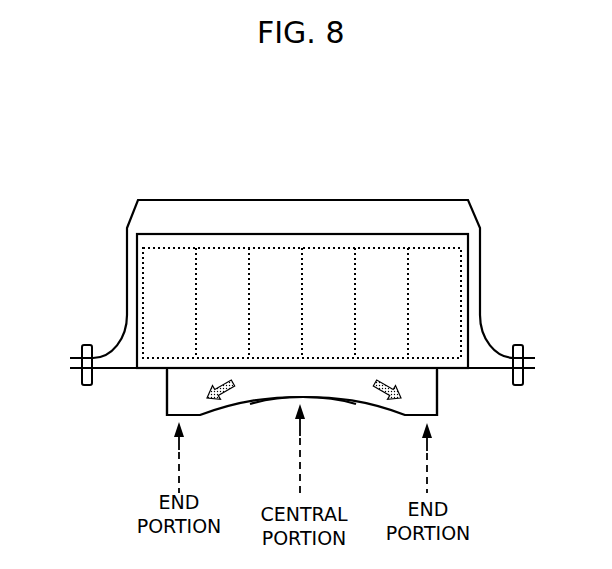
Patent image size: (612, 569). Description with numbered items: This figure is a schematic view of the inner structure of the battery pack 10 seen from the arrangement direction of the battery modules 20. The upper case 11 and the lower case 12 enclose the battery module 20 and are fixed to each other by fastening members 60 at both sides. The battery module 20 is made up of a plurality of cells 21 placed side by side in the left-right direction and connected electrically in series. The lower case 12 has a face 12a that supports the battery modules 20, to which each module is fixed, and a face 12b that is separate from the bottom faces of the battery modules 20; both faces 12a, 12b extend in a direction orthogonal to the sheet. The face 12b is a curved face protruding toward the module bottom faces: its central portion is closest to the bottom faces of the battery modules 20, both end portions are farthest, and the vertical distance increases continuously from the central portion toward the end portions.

The battery pack 10 is at (488, 204).
The upper case 11 is at (313, 199).
The battery module 20 is at (391, 227).
The cell 21 is at (184, 316).
The fastening member 60 is at (84, 345).
The lower case 12 is at (485, 377).
The face 12a is at (152, 372).
The face 12b is at (342, 400).